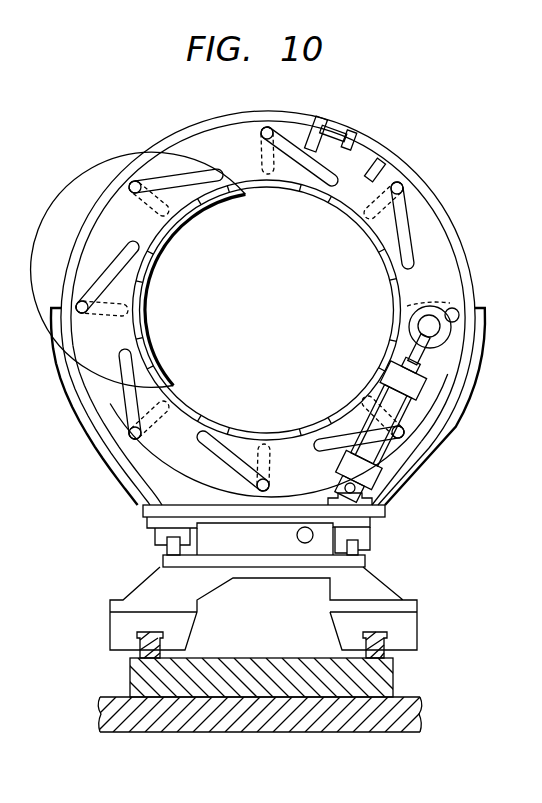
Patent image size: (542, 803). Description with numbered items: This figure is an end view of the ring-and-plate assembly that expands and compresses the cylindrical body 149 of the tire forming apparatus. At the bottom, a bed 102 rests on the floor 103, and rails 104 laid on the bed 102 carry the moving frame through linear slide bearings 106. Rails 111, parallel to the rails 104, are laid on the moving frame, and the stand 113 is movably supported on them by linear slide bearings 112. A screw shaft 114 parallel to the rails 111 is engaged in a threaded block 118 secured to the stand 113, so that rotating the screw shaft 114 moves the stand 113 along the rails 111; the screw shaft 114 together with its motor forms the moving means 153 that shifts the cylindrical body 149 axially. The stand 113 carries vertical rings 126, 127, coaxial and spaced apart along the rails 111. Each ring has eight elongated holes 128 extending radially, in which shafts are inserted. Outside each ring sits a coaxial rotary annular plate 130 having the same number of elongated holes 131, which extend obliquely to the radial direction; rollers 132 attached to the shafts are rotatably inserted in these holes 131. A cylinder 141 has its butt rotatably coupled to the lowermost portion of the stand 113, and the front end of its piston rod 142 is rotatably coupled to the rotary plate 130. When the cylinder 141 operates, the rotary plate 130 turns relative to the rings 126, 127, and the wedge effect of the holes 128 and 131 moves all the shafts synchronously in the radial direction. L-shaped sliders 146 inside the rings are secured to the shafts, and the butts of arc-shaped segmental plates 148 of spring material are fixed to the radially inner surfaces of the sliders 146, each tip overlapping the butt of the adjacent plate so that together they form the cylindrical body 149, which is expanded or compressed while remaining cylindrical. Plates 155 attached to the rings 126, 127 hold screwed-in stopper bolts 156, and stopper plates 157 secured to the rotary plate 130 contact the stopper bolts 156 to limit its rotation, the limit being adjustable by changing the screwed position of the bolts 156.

The bed 102 is at (243, 666).
The floor 103 is at (418, 712).
The rails 104 is at (387, 655).
The linear slide bearings 106 is at (403, 625).
The rails 111 is at (360, 548).
The linear slide bearings 112 is at (373, 533).
The stand 113 is at (118, 472).
The screw shaft 114 is at (303, 545).
The threaded block 118 is at (275, 536).
The vertical ring 126 is at (447, 208).
The vertical ring 127 is at (447, 208).
The elongated holes 128 is at (157, 204).
The rotary annular plate 130 is at (450, 282).
The elongated holes 131 is at (190, 178).
The rollers 132 is at (135, 187).
The cylinder 141 is at (377, 446).
The piston rod 142 is at (422, 343).
The L-shaped sliders 146 is at (223, 197).
The arc-shaped segmental plates 148 is at (268, 190).
The cylindrical body 149 is at (189, 219).
The moving means 153 is at (152, 540).
The plates 155 is at (317, 120).
The stopper bolts 156 is at (340, 136).
The stopper plates 157 is at (382, 164).